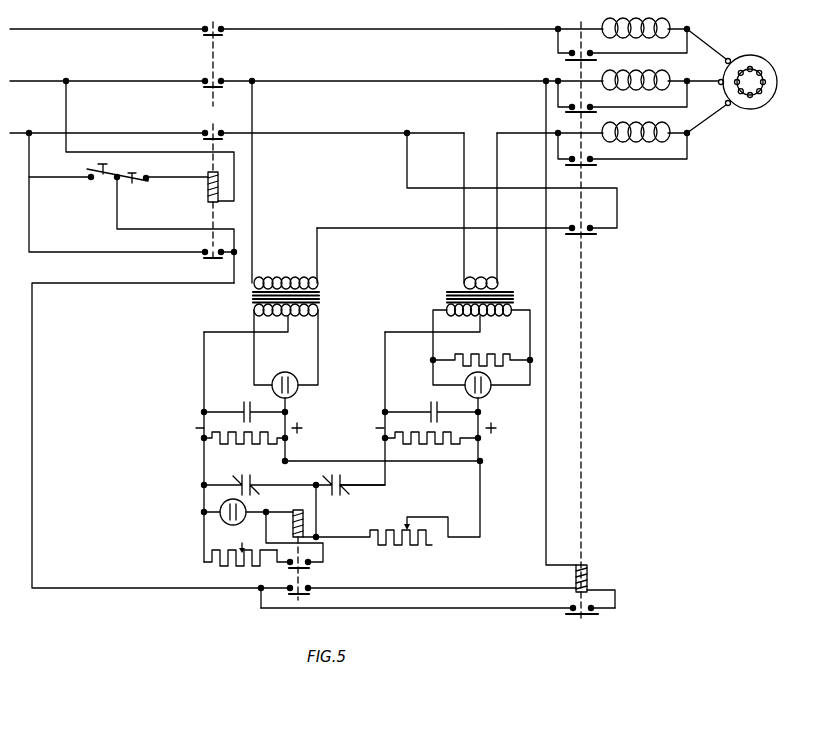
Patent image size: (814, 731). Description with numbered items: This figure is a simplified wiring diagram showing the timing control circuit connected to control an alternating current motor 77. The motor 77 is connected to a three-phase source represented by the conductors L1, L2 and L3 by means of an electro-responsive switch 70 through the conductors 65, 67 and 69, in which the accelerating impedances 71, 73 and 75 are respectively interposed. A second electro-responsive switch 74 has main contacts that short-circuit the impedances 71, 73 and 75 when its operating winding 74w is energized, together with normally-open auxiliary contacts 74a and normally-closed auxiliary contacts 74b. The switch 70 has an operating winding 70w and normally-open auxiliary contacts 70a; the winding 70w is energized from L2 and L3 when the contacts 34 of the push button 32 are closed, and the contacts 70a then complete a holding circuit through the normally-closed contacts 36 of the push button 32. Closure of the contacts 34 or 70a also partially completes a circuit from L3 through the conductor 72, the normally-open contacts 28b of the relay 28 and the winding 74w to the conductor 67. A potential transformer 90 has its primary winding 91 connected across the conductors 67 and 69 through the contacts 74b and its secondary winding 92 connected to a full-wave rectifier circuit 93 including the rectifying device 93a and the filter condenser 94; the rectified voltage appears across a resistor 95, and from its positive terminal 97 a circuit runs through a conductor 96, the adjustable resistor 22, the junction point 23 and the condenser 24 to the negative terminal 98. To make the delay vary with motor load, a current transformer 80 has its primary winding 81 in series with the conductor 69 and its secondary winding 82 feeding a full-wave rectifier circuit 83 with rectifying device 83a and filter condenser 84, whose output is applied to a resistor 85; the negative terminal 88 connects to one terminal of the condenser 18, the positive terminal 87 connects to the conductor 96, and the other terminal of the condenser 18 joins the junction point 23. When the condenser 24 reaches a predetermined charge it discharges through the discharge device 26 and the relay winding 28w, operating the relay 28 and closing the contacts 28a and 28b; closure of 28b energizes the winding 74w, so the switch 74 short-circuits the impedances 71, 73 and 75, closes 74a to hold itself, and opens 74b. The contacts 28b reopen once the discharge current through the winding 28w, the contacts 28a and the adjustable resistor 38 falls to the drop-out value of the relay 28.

The supply conductor L1 is at (37, 28).
The supply conductor L2 is at (37, 80).
The supply conductor L3 is at (37, 132).
The conductor 65 is at (331, 31).
The conductor 67 is at (366, 81).
The conductor 69 is at (364, 133).
The electro-responsive switch 70 is at (211, 124).
The operating winding 70w is at (207, 192).
The normally-open auxiliary contacts 70a is at (212, 250).
The push button 32 is at (117, 167).
The contacts 34 is at (96, 177).
The normally-closed contacts 36 is at (139, 175).
The accelerating impedance 71 is at (613, 36).
The accelerating impedance 73 is at (640, 88).
The accelerating impedance 75 is at (643, 140).
The alternating current motor 77 is at (750, 55).
The electro-responsive switch 74 is at (583, 326).
The normally-closed auxiliary contacts 74b is at (590, 236).
The operating winding 74w is at (588, 572).
The normally-open auxiliary contacts 74a is at (590, 614).
The potential transformer 90 is at (299, 299).
The primary winding 91 is at (297, 279).
The secondary winding 92 is at (306, 317).
The full wave rectifier circuit 93 is at (330, 447).
The rectifying device 93a is at (297, 375).
The filter condenser 94 is at (244, 410).
The resistor 95 is at (248, 447).
The positive terminal 97 is at (297, 443).
The negative terminal 98 is at (203, 439).
The current transformer 80 is at (491, 299).
The primary winding 81 is at (470, 279).
The secondary winding 82 is at (497, 316).
The full-wave rectifier circuit 83 is at (409, 408).
The rectifying device 83a is at (493, 395).
The filter condenser 84 is at (439, 418).
The resistor 85 is at (444, 446).
The positive terminal 87 is at (481, 440).
The negative terminal 88 is at (383, 440).
The conductor 96 is at (478, 470).
The condenser 24 is at (252, 483).
The junction point 23 is at (306, 501).
The condenser 18 is at (338, 480).
The discharge device 26 is at (241, 525).
The relay 28 is at (295, 578).
The relay winding 28w is at (305, 521).
The contacts 28a is at (311, 559).
The normally-open contacts 28b is at (310, 587).
The adjustable resistor 38 is at (236, 570).
The adjustable resistor 22 is at (397, 547).
The conductor 72 is at (33, 545).